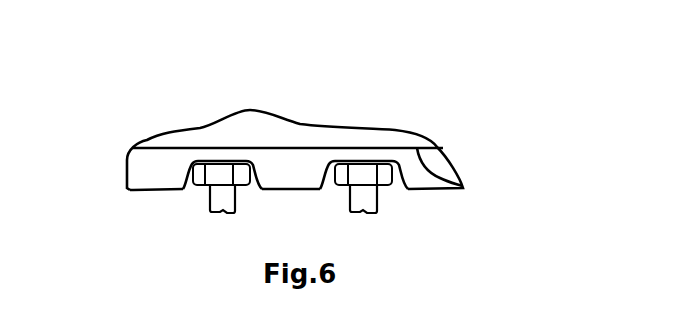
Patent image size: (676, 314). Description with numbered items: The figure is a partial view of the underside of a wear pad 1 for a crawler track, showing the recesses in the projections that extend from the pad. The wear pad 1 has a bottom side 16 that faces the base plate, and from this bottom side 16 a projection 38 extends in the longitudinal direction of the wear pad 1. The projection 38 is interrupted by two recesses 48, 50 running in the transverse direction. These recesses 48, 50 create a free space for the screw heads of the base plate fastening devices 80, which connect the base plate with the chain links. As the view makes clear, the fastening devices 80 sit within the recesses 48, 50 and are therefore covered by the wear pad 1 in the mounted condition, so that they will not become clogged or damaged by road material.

The wear pad 1 is at (200, 128).
The projection 38 is at (288, 178).
The bottom side 16 is at (467, 180).
The recess 48 is at (187, 190).
The recess 50 is at (330, 187).
The base plate fastening device 80 is at (220, 177).